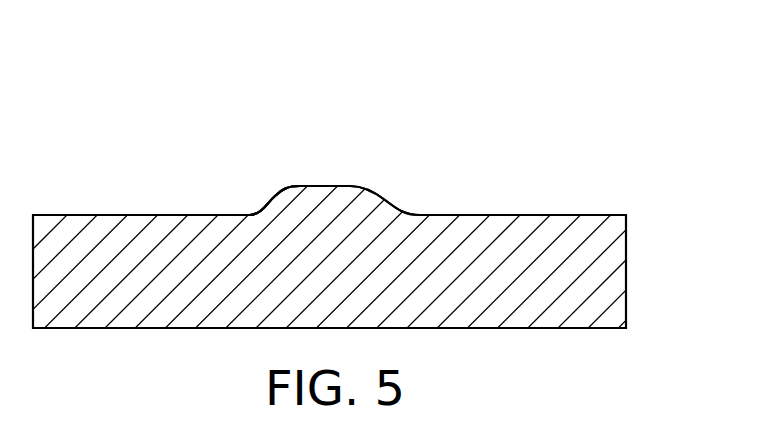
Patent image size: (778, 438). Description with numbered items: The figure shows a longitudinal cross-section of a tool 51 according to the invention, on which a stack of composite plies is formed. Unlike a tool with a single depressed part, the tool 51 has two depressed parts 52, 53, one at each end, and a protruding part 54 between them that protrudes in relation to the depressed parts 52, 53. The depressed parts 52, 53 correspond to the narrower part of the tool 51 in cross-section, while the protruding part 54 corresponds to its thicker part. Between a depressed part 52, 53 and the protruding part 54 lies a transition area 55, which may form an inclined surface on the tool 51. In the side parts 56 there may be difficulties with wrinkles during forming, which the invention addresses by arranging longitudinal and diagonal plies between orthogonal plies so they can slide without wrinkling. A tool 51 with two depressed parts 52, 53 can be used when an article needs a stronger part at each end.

The tool 51 is at (453, 132).
The depressed part 52 is at (113, 188).
The depressed part 53 is at (548, 187).
The protruding part 54 is at (339, 161).
The transition area 55 is at (268, 203).
The side part 56 is at (440, 272).